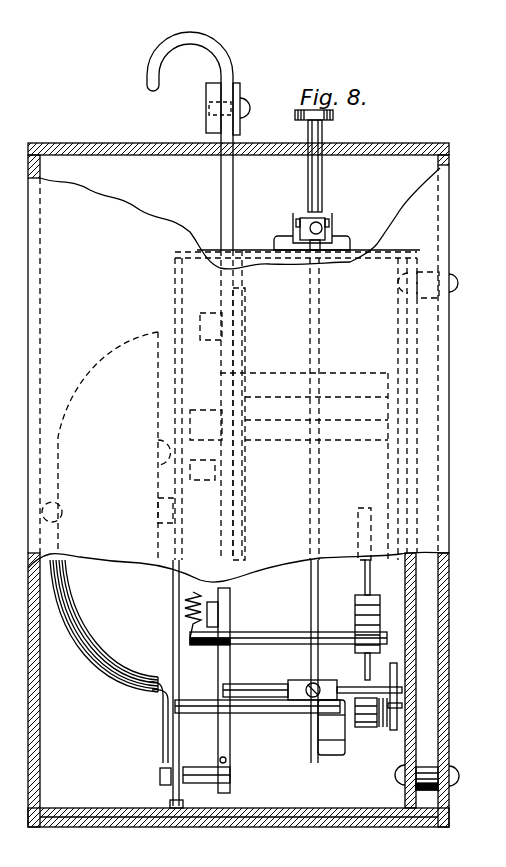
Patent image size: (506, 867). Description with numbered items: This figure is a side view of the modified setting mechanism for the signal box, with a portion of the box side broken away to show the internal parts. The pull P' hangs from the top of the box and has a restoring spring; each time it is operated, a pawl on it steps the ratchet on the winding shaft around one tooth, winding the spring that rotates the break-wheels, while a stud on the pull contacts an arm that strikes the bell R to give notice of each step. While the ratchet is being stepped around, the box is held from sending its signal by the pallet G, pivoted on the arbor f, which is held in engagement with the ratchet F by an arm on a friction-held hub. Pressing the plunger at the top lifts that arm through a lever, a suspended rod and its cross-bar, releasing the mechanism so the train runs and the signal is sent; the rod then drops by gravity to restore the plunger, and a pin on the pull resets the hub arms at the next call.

The pull P' is at (200, 141).
The ratchet F is at (364, 585).
The pallet G is at (355, 622).
The arbor f is at (278, 632).
The bell R is at (112, 678).